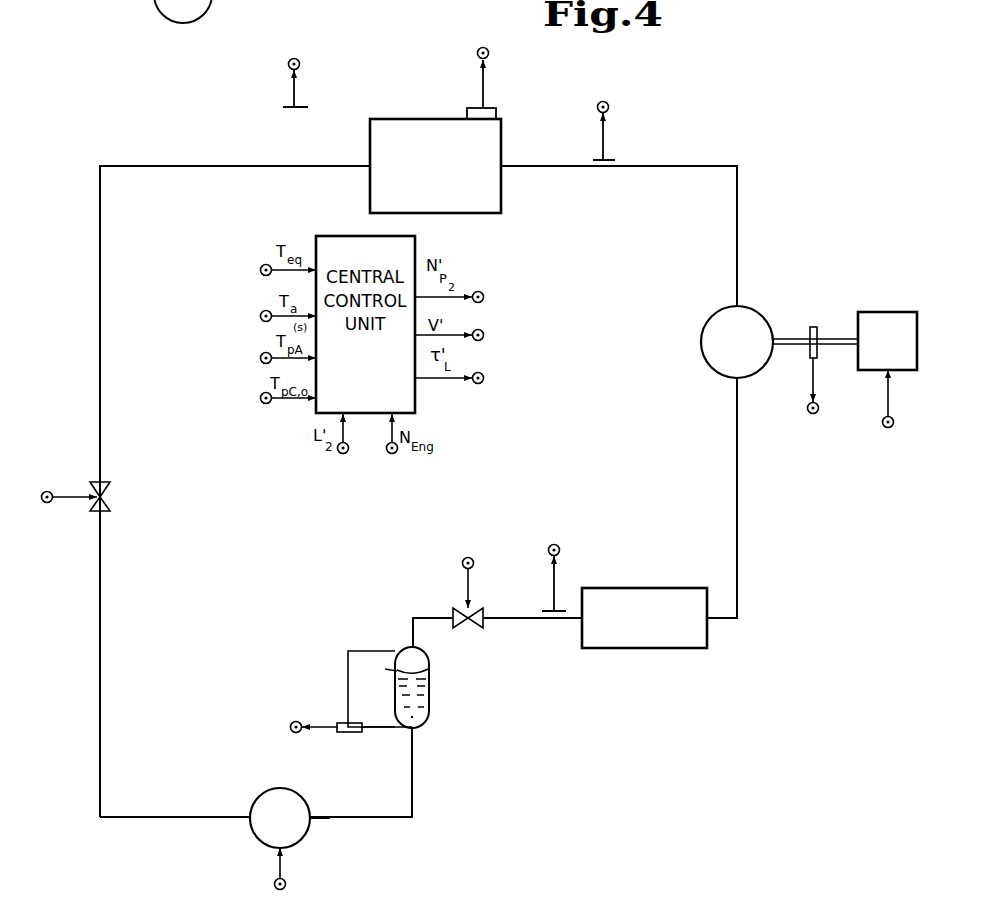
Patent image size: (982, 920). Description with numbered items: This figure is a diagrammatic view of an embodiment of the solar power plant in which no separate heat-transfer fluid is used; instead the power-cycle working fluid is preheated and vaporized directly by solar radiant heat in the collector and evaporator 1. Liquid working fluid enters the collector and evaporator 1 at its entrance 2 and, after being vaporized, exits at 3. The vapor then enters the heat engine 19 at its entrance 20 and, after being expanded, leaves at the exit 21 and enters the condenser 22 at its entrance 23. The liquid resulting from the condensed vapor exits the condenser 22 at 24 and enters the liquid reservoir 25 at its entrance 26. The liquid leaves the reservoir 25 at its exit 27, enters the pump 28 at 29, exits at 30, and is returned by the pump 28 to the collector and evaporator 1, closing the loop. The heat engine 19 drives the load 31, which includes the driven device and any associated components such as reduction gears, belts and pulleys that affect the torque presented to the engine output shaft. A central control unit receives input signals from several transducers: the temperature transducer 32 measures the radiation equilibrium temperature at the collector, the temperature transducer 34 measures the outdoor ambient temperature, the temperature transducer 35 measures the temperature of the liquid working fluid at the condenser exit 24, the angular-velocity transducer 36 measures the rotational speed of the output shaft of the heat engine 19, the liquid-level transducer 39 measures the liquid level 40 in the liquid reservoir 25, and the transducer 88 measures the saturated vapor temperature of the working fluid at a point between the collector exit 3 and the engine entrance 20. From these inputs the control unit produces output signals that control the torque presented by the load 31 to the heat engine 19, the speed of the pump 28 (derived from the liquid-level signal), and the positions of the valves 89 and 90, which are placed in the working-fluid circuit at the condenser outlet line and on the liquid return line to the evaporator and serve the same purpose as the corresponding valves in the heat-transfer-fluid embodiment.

The collector and evaporator 1 is at (392, 119).
The entrance of collector and evaporator 2 is at (370, 166).
The exit of collector and evaporator 3 is at (502, 166).
The heat engine 19 is at (703, 346).
The heat engine entrance 20 is at (735, 306).
The heat engine exit 21 is at (735, 378).
The condenser 22 is at (671, 588).
The condenser entrance 23 is at (711, 622).
The condenser exit 24 is at (582, 622).
The liquid reservoir 25 is at (417, 698).
The liquid reservoir entrance 26 is at (411, 645).
The liquid reservoir exit 27 is at (414, 729).
The pump 28 is at (291, 789).
The pump entrance 29 is at (306, 808).
The pump exit 30 is at (253, 808).
The load 31 is at (888, 312).
The temperature transducer 32 is at (489, 108).
The temperature transducer 34 is at (285, 107).
The temperature transducer 35 is at (566, 611).
The angular-velocity transducer 36 is at (815, 327).
The liquid-level transducer 39 is at (350, 733).
The liquid level 40 is at (430, 669).
The transducer 88 is at (618, 160).
The valve 89 is at (457, 612).
The valve 90 is at (96, 506).